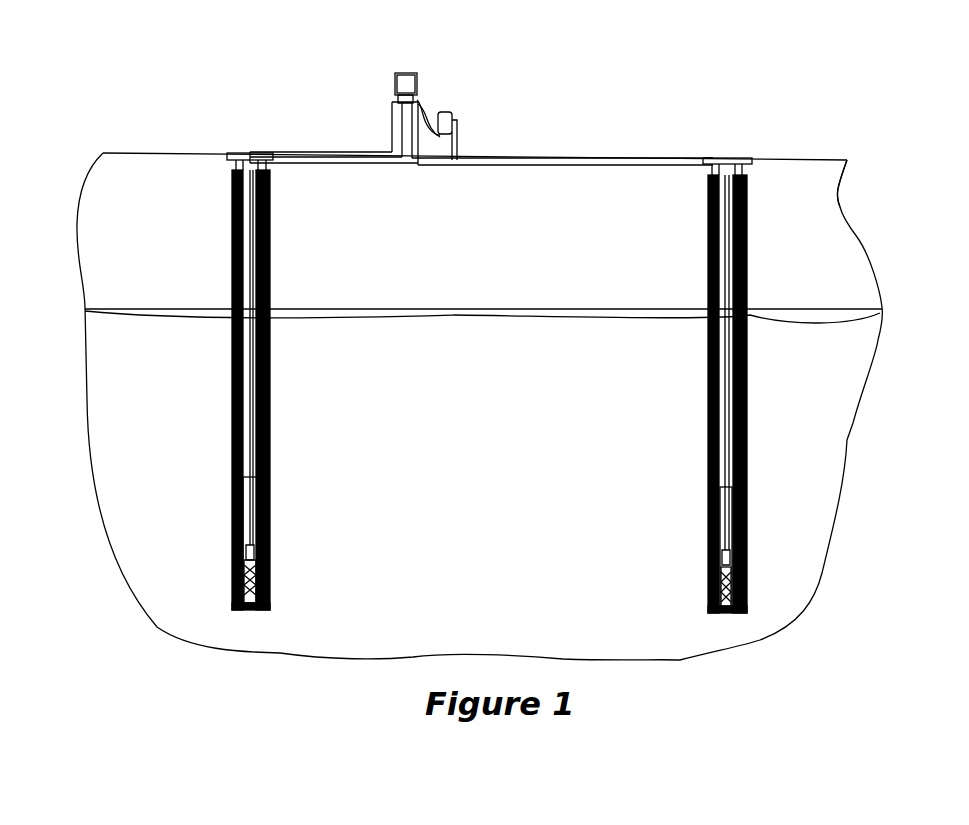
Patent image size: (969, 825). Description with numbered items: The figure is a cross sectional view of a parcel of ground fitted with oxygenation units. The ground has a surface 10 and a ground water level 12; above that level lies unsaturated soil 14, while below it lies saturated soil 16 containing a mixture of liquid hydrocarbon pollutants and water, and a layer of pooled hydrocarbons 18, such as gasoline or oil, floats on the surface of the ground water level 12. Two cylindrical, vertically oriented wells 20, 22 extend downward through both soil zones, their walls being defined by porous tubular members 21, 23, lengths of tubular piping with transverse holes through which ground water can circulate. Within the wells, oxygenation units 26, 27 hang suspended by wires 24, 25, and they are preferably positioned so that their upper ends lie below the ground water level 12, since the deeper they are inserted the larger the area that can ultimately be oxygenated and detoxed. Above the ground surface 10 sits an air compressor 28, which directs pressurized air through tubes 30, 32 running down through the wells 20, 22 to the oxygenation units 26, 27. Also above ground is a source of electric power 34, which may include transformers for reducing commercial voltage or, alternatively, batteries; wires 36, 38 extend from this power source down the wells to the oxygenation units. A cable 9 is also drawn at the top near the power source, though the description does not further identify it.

The power cable 9 is at (452, 103).
The surface 10 is at (783, 158).
The ground water level 12 is at (793, 315).
The unsaturated soil 14 is at (508, 259).
The saturated soil 16 is at (508, 474).
The layer of pooled hydrocarbons 18 is at (455, 317).
The well 20 is at (223, 390).
The porous tubular member 21 is at (267, 468).
The well 22 is at (725, 401).
The porous tubular member 23 is at (745, 478).
The wire 24 is at (247, 227).
The wire 25 is at (732, 227).
The oxygenation unit 26 is at (225, 567).
The oxygenation unit 27 is at (705, 567).
The air compressor 28 is at (393, 97).
The tube 30 is at (302, 163).
The tube 32 is at (683, 170).
The source of electric power 34 is at (398, 78).
The wire 36 is at (295, 157).
The wire 38 is at (565, 160).